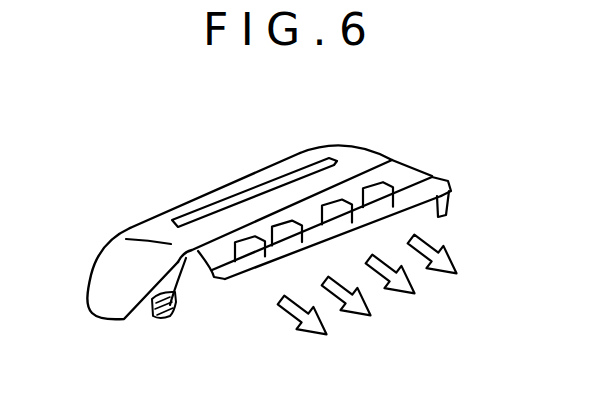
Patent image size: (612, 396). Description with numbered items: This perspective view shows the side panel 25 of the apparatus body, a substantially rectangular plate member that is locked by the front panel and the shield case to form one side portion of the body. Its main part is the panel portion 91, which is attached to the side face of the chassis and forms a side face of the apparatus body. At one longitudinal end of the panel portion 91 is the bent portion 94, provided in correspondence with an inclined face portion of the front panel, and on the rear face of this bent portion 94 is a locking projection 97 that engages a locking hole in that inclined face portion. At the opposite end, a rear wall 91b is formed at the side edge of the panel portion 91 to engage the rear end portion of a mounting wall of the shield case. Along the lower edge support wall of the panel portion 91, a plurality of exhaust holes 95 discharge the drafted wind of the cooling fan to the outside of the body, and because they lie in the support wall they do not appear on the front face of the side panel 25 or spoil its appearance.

The side panel 25 is at (155, 213).
The panel portion 91 is at (228, 190).
The rear wall 91b is at (428, 212).
The bent portion 94 is at (110, 306).
The exhaust holes 95 is at (312, 228).
The locking projection 97 is at (158, 319).